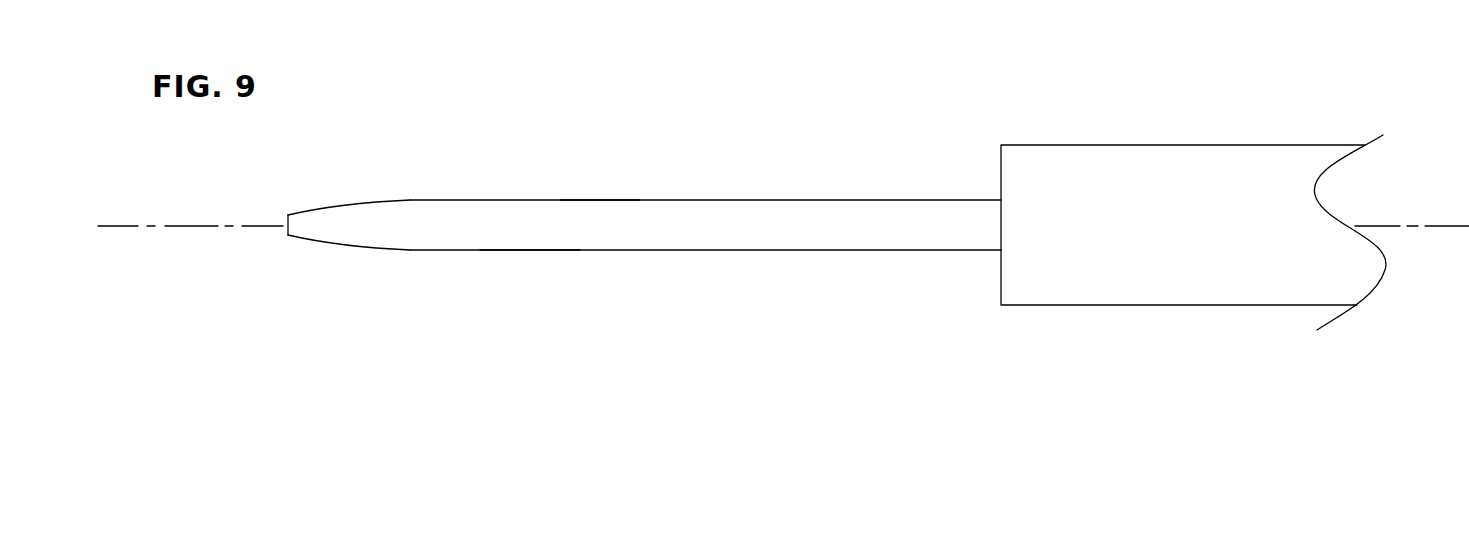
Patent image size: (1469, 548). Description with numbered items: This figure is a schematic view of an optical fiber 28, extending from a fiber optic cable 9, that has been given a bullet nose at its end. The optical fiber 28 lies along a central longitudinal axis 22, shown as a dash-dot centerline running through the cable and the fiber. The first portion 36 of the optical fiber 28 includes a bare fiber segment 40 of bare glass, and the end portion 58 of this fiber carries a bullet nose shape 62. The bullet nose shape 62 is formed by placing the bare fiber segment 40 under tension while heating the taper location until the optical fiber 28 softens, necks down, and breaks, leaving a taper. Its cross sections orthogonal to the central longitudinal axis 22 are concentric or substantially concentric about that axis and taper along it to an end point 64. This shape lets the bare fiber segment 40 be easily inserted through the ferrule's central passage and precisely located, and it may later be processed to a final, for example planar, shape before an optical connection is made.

The fiber optic cable 9 is at (1217, 145).
The central longitudinal axis 22 is at (130, 226).
The optical fiber 28 is at (783, 198).
The first portion 36 is at (599, 190).
The bare fiber segment 40 is at (528, 250).
The end portion 58 is at (338, 279).
The bullet nose shape 62 is at (314, 208).
The end point 64 is at (288, 234).